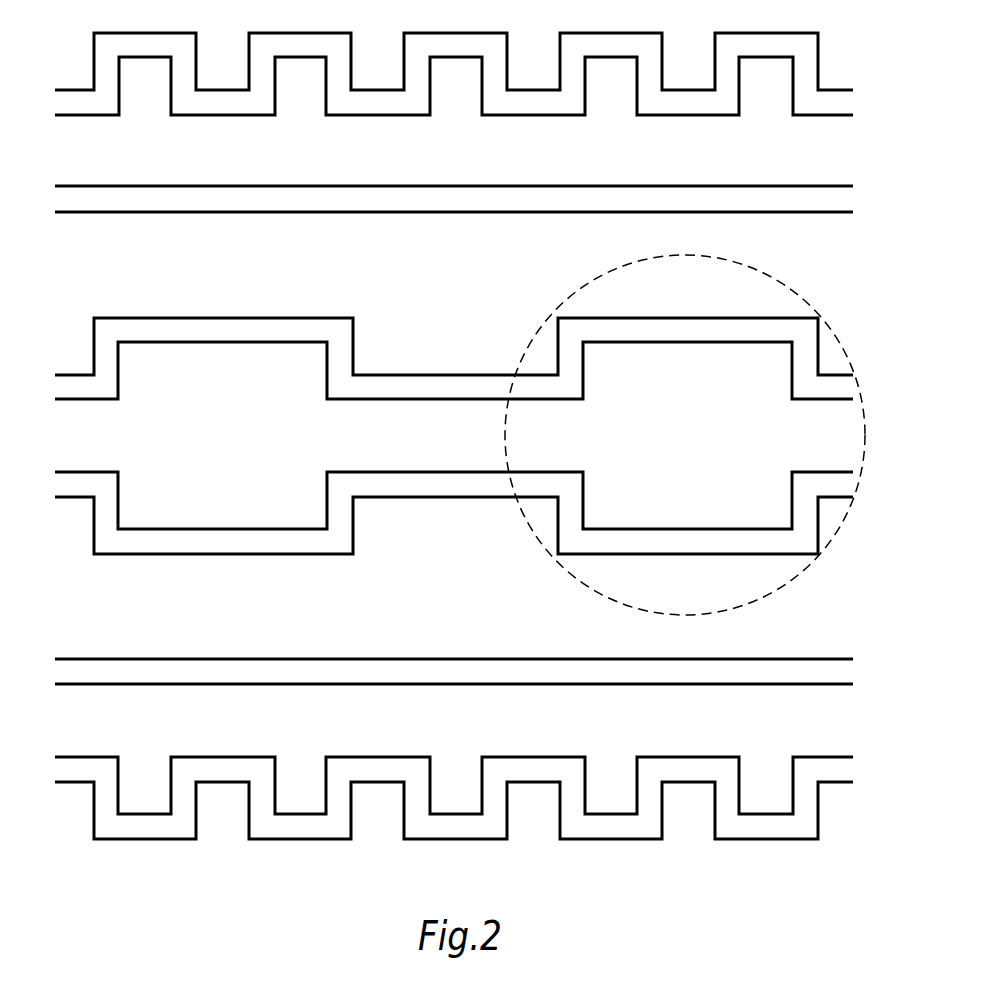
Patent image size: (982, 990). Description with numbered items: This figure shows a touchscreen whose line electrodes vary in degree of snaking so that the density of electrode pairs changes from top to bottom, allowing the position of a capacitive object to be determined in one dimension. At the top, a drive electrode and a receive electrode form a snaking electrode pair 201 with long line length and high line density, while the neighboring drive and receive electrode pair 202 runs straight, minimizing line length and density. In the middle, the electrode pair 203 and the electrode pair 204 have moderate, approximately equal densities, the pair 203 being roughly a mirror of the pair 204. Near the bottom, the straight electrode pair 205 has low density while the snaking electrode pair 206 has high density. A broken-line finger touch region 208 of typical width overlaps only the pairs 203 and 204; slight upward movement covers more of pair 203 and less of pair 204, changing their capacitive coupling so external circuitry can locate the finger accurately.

The X0, Y0 electrode pair 201 is at (843, 102).
The X1, Y0 electrode pair 202 is at (843, 200).
The X0, Y0 electrode pair 203 is at (843, 388).
The X1, Y0 electrode pair 204 is at (843, 483).
The X0, Y0 electrode pair 205 is at (843, 673).
The X1, Y0 electrode pair 206 is at (843, 770).
The finger touch region 208 is at (600, 278).